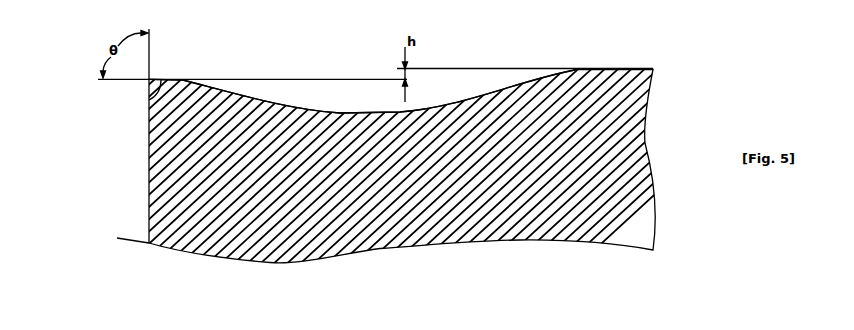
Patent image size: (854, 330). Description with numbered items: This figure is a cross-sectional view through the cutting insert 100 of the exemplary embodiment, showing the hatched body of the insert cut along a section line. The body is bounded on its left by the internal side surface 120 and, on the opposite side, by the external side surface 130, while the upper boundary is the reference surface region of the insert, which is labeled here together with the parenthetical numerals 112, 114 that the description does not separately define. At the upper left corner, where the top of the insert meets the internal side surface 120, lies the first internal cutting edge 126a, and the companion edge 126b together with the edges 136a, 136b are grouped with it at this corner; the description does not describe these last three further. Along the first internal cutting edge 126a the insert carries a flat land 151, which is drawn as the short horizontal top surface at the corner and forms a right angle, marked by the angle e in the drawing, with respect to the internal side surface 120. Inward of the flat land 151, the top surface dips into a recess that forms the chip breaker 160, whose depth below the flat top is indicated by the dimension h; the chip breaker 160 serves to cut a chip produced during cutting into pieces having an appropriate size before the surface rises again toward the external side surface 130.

The cutting insert 100 is at (613, 69).
The first layer 112 is at (400, 144).
The second layer 114 is at (400, 144).
The internal side surface 120 is at (147, 162).
The external side surface 130 is at (118, 136).
The flat land 151 is at (163, 79).
The chip breaker 160 is at (372, 112).
The first internal cutting edge 126a is at (149, 113).
The corner edge 126b is at (113, 102).
The corner edge 136a is at (113, 102).
The corner edge 136b is at (136, 102).